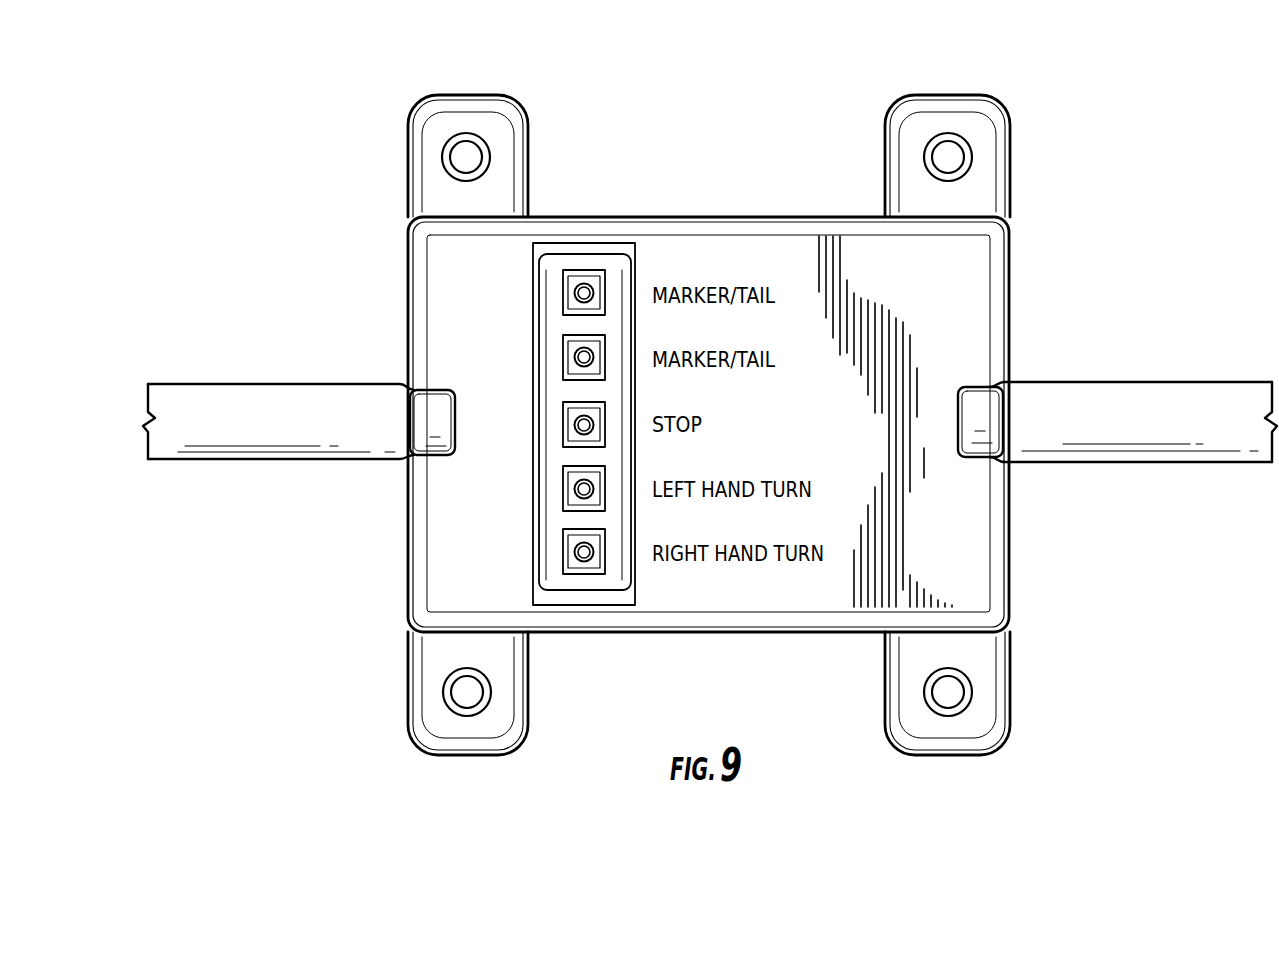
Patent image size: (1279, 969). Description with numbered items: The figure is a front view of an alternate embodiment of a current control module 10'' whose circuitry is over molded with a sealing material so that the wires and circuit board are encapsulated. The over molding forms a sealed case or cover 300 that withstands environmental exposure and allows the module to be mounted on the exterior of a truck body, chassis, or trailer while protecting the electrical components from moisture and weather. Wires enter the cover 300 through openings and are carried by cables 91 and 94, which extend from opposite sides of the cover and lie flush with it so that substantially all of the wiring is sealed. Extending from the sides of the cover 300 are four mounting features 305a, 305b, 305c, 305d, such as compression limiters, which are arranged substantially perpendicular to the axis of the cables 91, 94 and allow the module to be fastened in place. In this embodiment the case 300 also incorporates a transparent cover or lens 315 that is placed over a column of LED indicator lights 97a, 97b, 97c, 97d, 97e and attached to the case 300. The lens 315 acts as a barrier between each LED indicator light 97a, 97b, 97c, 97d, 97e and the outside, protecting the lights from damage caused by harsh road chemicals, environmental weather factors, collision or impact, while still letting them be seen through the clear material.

The current control module 10'' is at (775, 101).
The cover 300 is at (582, 214).
The mounting feature 305a is at (471, 95).
The mounting feature 305b is at (955, 95).
The mounting feature 305c is at (945, 755).
The mounting feature 305d is at (466, 755).
The transparent lens 315 is at (633, 572).
The LED indicator light 97a is at (575, 293).
The LED indicator light 97b is at (575, 357).
The LED indicator light 97c is at (575, 425).
The LED indicator light 97d is at (575, 489).
The LED indicator light 97e is at (575, 552).
The cable 91 is at (283, 369).
The cable 94 is at (1150, 380).